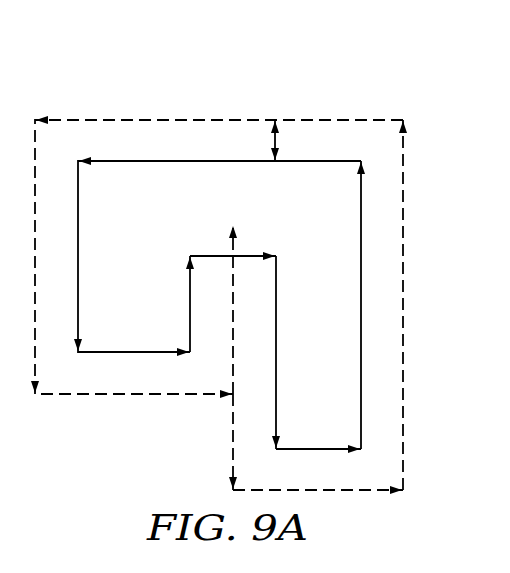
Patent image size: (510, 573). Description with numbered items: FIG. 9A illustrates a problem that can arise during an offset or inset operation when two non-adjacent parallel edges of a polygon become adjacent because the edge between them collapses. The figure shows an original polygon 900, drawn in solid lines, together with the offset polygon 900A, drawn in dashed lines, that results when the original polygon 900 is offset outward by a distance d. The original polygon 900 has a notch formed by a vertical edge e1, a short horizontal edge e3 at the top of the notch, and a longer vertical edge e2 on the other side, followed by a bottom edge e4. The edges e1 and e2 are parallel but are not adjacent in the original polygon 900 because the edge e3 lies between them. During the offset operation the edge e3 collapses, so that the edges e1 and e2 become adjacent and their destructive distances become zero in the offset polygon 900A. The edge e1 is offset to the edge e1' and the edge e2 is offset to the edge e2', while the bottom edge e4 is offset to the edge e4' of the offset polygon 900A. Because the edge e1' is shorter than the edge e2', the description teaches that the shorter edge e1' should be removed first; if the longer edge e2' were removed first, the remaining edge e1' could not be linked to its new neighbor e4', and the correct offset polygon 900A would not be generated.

The original polygon 900 is at (131, 353).
The offset polygon 900A is at (97, 119).
The edge e1 is at (178, 304).
The edge e2 is at (288, 352).
The edge e3 is at (233, 246).
The edge e4 is at (318, 439).
The edge e1' is at (232, 297).
The edge e2' is at (217, 442).
The edge e4' is at (318, 480).
The offset distance d is at (283, 140).